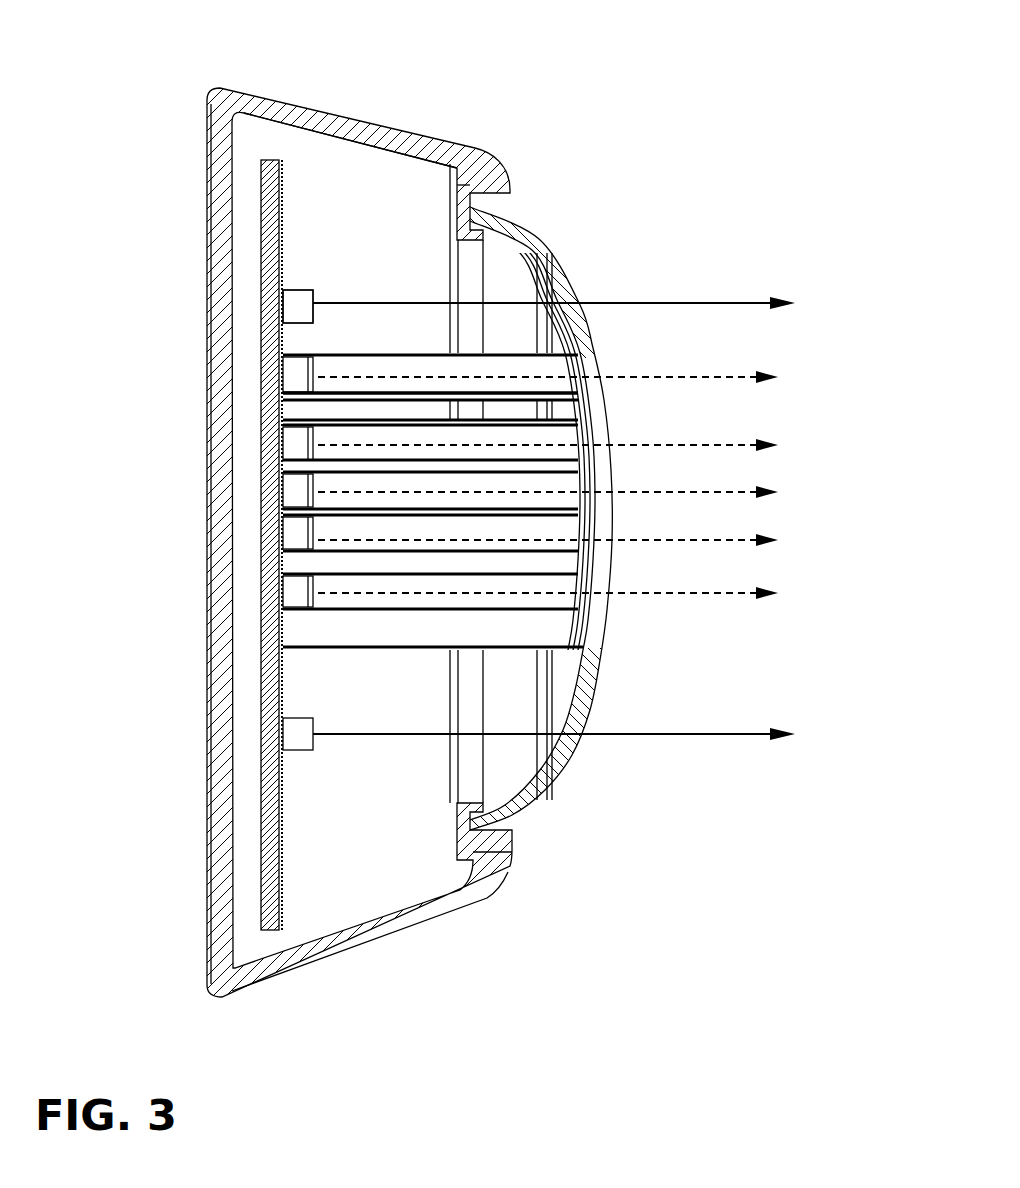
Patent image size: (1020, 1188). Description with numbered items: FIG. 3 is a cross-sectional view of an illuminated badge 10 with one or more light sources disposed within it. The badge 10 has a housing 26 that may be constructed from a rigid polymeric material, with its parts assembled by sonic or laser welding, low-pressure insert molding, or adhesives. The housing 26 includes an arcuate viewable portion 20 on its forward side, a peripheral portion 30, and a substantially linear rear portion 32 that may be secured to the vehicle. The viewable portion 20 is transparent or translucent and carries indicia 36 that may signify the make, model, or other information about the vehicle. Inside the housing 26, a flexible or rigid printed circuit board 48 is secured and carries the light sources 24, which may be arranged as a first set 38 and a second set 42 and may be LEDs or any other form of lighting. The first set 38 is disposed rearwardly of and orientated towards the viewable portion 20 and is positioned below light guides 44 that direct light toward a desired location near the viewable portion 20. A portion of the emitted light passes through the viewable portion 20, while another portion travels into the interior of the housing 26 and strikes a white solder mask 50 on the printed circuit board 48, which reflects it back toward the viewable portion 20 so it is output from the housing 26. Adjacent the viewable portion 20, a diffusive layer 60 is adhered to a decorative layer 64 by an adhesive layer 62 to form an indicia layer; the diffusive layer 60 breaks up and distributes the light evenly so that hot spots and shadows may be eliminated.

The badge 10 is at (450, 501).
The viewable portion 20 is at (574, 258).
The light sources 24 is at (283, 308).
The housing 26 is at (230, 88).
The peripheral portion 30 is at (335, 118).
The rear portion 32 is at (235, 433).
The indicia 36 is at (588, 395).
The first set of light sources 38 is at (278, 533).
The second set of light sources 42 is at (277, 313).
The light guides 44 is at (548, 615).
The printed circuit board 48 is at (290, 650).
The white solder mask 50 is at (278, 800).
The diffusive layer 60 is at (572, 362).
The adhesive layer 62 is at (580, 373).
The decorative layer 64 is at (588, 370).